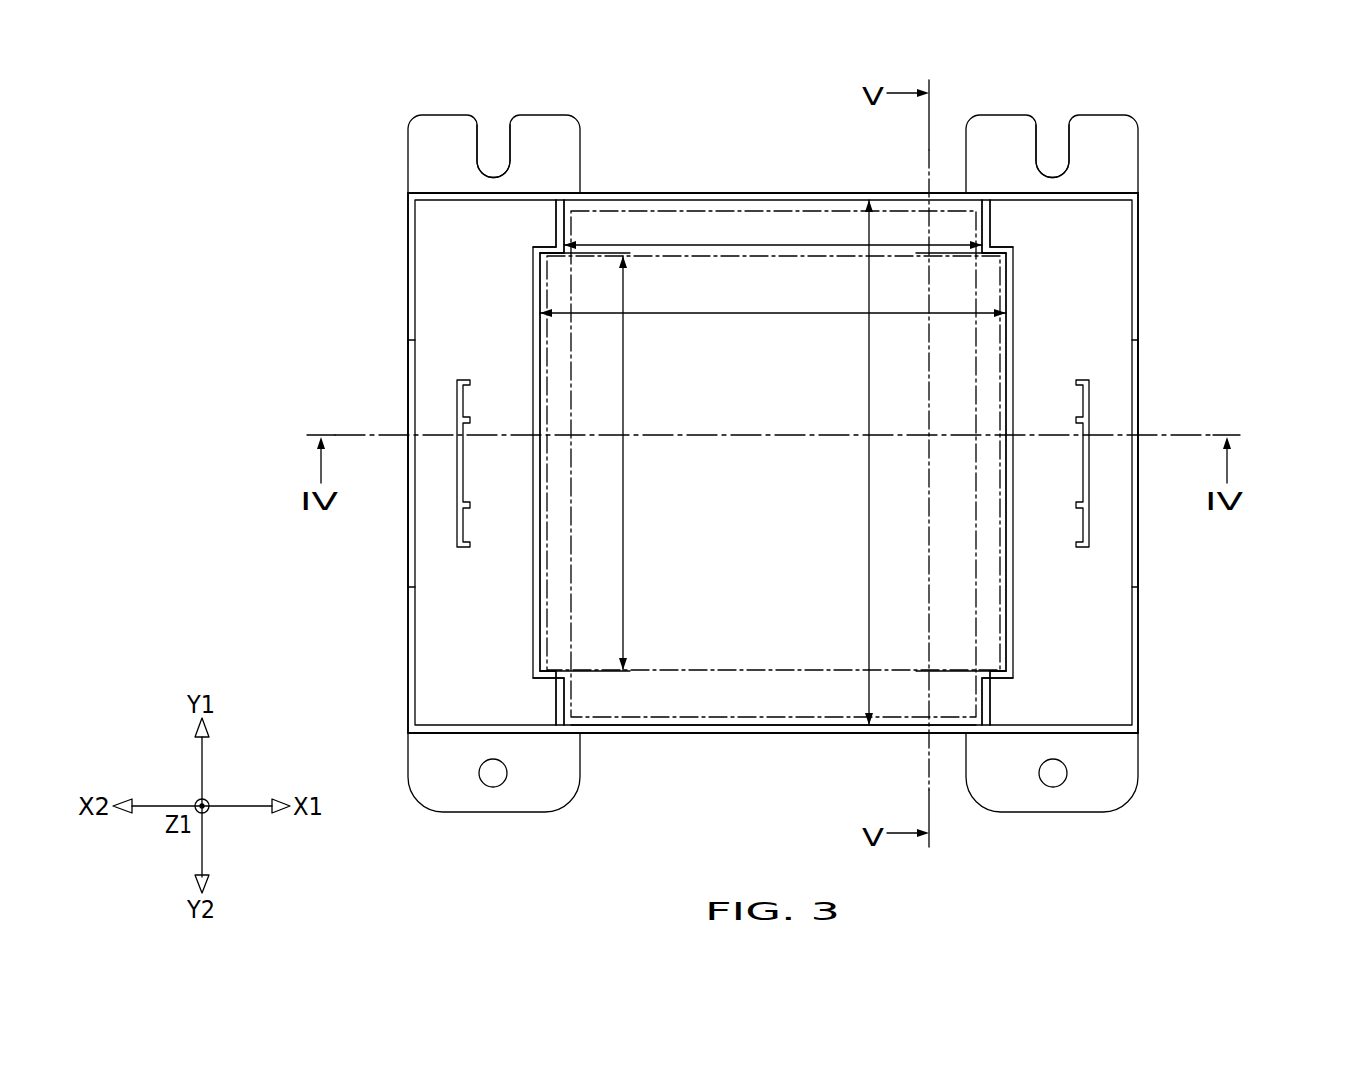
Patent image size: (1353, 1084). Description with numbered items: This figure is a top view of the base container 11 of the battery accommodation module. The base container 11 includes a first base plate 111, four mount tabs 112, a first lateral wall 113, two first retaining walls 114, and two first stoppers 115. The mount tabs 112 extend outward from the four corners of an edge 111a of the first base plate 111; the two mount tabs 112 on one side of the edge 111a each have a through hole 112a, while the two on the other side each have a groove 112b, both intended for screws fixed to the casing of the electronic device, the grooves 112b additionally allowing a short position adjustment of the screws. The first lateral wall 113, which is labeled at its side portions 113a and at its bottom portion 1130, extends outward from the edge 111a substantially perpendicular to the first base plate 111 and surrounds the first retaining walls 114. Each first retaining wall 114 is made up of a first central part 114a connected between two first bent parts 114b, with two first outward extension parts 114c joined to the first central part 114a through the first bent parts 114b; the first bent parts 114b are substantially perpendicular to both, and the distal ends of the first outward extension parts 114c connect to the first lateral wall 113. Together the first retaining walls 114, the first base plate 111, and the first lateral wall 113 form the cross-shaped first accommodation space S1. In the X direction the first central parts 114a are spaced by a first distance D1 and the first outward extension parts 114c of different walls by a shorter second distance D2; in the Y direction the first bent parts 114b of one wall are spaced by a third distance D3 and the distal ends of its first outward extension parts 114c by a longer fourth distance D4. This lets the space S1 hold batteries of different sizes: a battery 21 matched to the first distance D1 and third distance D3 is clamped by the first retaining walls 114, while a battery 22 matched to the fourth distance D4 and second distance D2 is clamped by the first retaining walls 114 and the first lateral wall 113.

The base container 11 is at (1332, 118).
The first base plate 111 is at (767, 535).
The edge of the first base plate 111a is at (824, 182).
The mount tab 112 is at (422, 150).
The through hole 112a is at (488, 788).
The groove 112b is at (492, 152).
The first lateral wall 113 is at (632, 198).
The side wall section 113a is at (396, 481).
The bottom wall 1130 is at (792, 712).
The first retaining wall 114 is at (522, 301).
The first central part 114a is at (540, 633).
The first bent part 114b is at (548, 248).
The first outward extension part 114c is at (556, 222).
The first stopper 115 is at (462, 470).
The battery 21 is at (550, 360).
The battery 22 is at (722, 212).
The first accommodation space S1 is at (696, 592).
The first distance D1 is at (773, 300).
The second distance D2 is at (773, 232).
The third distance D3 is at (607, 463).
The fourth distance D4 is at (852, 462).